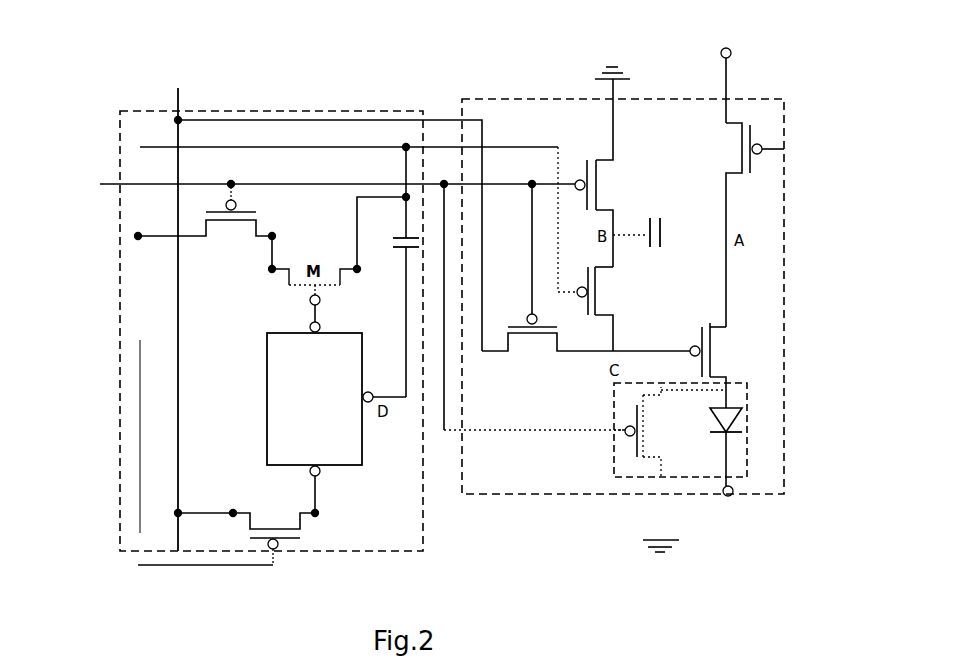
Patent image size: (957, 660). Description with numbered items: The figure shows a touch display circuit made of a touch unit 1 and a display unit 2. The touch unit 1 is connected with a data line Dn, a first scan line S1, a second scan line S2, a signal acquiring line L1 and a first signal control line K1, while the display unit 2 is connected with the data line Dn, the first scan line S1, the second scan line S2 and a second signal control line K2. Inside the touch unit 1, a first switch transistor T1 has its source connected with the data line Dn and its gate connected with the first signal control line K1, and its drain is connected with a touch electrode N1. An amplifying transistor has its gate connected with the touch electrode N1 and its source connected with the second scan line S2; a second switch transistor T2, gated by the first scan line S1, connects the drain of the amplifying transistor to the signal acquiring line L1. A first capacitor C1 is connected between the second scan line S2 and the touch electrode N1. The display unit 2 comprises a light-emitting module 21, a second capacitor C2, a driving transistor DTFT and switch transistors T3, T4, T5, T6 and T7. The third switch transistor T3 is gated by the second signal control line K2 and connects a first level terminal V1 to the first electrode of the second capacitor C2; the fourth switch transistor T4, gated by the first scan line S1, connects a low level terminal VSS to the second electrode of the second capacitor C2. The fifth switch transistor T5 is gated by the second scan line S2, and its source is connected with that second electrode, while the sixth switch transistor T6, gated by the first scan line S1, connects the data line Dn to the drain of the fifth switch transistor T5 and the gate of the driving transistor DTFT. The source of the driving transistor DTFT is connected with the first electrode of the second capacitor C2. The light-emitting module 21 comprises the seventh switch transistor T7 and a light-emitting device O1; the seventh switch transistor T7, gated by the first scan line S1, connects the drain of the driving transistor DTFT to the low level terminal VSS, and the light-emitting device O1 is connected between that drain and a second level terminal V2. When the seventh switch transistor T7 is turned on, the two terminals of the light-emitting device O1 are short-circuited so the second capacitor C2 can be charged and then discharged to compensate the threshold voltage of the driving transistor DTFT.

The touch unit 1 is at (138, 108).
The display unit 2 is at (786, 283).
The light-emitting module 21 is at (614, 410).
The data line Dn is at (178, 90).
The first scan line S1 is at (112, 183).
The second scan line S2 is at (235, 147).
The first signal control line K1 is at (175, 567).
The second signal control line K2 is at (784, 138).
The first level terminal V1 is at (731, 57).
The second level terminal V2 is at (733, 487).
The low level terminal VSS is at (602, 73).
The light-emitting device O1 is at (745, 402).
The signal acquiring line L1 is at (140, 308).
The first switch transistor T1 is at (246, 538).
The second switch transistor T2 is at (205, 230).
The third switch transistor T3 is at (737, 225).
The fourth switch transistor T4 is at (598, 173).
The fifth switch transistor T5 is at (599, 309).
The sixth switch transistor T6 is at (586, 274).
The seventh switch transistor T7 is at (670, 432).
The driving transistor DTFT is at (725, 365).
The first capacitor C1 is at (400, 272).
The second capacitor C2 is at (667, 230).
The touch electrode N1 is at (314, 399).